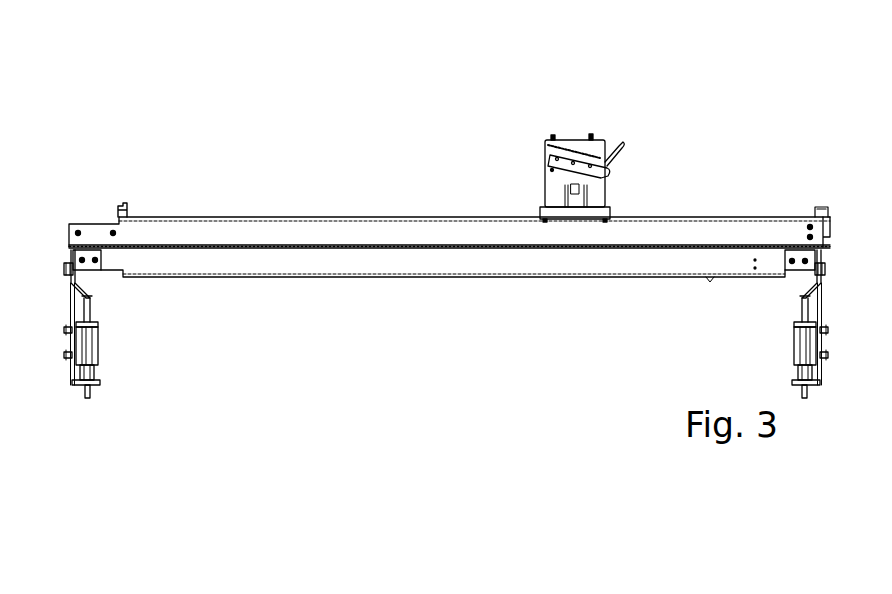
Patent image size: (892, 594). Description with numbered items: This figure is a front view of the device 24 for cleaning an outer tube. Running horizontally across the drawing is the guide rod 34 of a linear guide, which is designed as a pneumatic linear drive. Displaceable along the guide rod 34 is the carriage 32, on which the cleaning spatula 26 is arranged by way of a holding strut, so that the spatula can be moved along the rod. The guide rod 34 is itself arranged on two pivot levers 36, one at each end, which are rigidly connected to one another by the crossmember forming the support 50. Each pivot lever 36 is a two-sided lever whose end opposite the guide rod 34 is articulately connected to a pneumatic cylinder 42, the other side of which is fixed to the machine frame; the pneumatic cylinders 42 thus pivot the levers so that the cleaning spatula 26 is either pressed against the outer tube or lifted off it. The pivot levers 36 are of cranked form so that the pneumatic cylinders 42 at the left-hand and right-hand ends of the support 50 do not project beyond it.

The device 24 is at (485, 110).
The guide rod 34 is at (414, 217).
The crossmember 50 is at (93, 233).
The cleaning spatula 26 is at (612, 169).
The carriage 32 is at (612, 213).
The pivot lever 36 is at (88, 284).
The pneumatic cylinder 42 is at (97, 347).